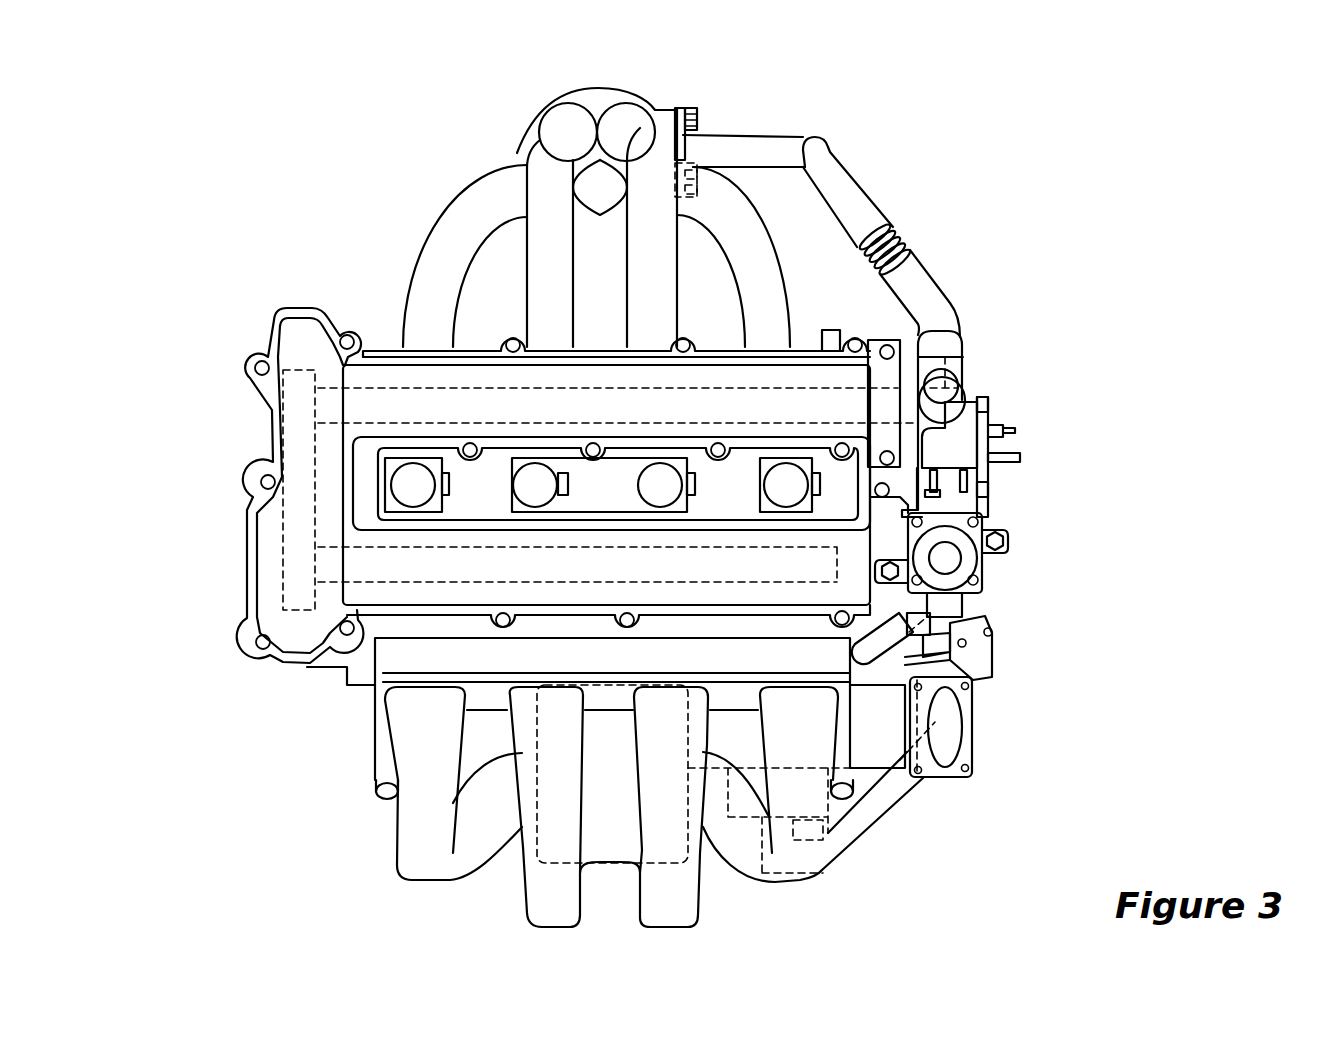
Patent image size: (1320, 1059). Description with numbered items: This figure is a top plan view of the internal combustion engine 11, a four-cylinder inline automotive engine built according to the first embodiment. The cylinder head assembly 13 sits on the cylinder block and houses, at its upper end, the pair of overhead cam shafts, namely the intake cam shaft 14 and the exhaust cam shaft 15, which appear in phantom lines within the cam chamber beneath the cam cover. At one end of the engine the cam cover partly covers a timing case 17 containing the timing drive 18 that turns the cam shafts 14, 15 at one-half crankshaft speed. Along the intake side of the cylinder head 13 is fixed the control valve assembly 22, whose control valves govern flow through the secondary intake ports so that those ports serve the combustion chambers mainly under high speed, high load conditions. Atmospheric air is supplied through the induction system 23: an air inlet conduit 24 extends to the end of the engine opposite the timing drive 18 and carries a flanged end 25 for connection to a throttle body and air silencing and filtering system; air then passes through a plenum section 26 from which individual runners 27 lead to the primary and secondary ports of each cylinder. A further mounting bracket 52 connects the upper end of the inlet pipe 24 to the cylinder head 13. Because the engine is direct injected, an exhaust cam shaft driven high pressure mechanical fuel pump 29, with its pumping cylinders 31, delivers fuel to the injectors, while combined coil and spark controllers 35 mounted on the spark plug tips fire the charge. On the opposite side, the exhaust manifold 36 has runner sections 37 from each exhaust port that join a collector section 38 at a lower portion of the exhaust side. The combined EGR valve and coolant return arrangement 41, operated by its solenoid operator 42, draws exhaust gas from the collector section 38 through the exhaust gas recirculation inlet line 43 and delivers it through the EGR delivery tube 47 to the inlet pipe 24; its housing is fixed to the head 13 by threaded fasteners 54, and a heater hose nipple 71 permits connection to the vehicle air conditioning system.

The internal combustion engine 11 is at (1000, 251).
The cylinder head assembly 13 is at (330, 660).
The intake cam shaft 14 is at (380, 582).
The exhaust cam shaft 15 is at (396, 388).
The timing case 17 is at (262, 585).
The timing drive 18 is at (298, 362).
The control valve assembly 22 is at (435, 667).
The induction system 23 is at (417, 886).
The air inlet conduit 24 is at (868, 757).
The flanged end 25 is at (950, 773).
The plenum section 26 is at (540, 863).
The runners 27 is at (407, 837).
The high pressure mechanical fuel pump 29 is at (965, 445).
The pumping cylinders 31 is at (965, 395).
The combined coil and spark controllers 35 is at (513, 472).
The exhaust manifold 36 is at (722, 124).
The runner sections 37 is at (543, 163).
The collector section 38 is at (600, 100).
The combined EGR valve and coolant return arrangement 41 is at (1008, 606).
The solenoid operator 42 is at (970, 563).
The exhaust gas recirculation inlet line 43 is at (858, 197).
The EGR delivery tube 47 is at (890, 802).
The mounting bracket 52 is at (993, 615).
The threaded fasteners 54 is at (988, 493).
The heater hose nipple 71 is at (878, 657).